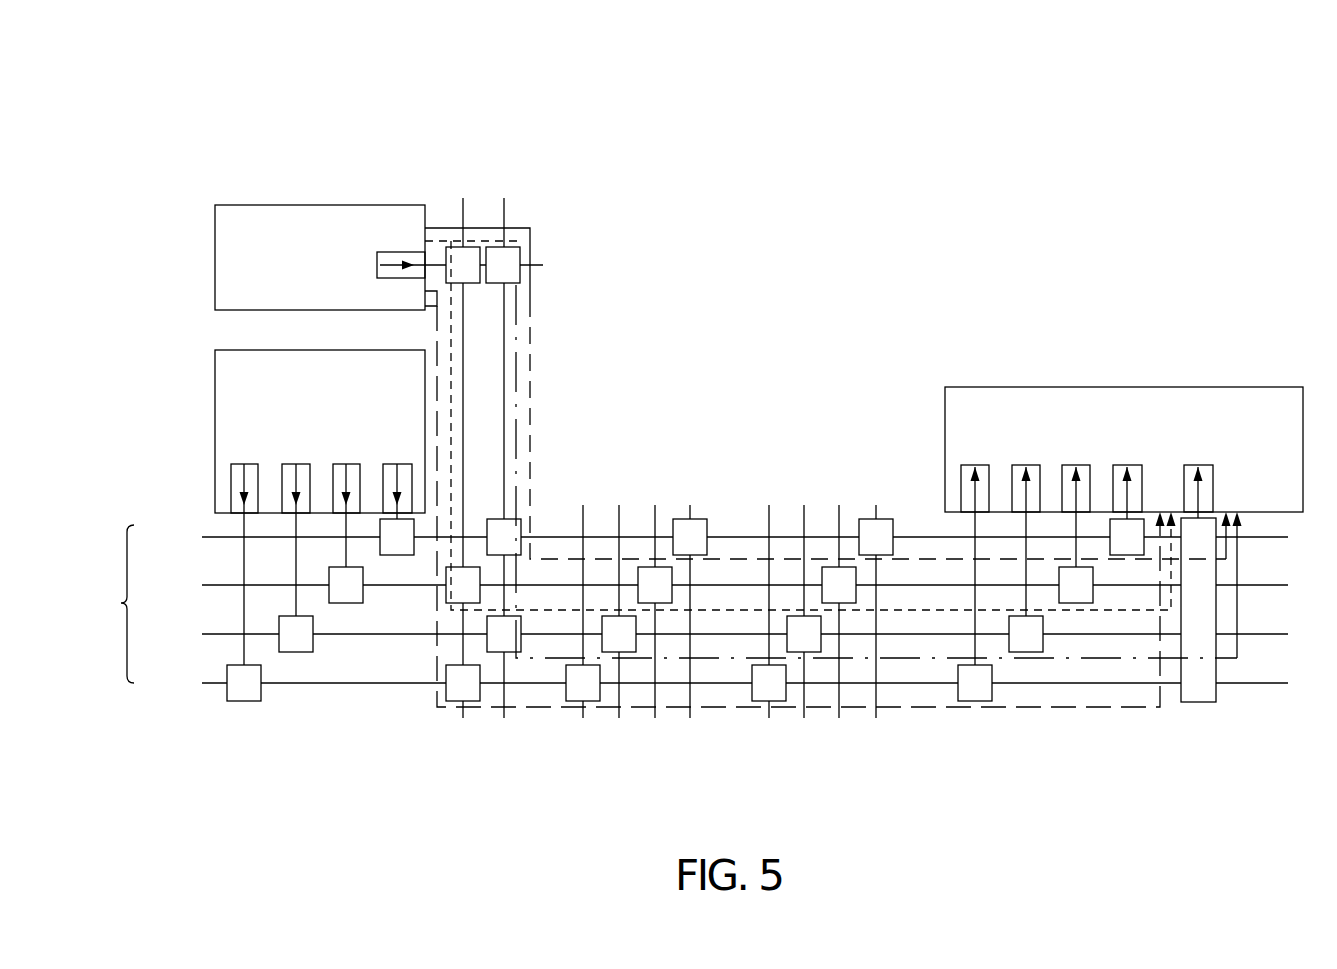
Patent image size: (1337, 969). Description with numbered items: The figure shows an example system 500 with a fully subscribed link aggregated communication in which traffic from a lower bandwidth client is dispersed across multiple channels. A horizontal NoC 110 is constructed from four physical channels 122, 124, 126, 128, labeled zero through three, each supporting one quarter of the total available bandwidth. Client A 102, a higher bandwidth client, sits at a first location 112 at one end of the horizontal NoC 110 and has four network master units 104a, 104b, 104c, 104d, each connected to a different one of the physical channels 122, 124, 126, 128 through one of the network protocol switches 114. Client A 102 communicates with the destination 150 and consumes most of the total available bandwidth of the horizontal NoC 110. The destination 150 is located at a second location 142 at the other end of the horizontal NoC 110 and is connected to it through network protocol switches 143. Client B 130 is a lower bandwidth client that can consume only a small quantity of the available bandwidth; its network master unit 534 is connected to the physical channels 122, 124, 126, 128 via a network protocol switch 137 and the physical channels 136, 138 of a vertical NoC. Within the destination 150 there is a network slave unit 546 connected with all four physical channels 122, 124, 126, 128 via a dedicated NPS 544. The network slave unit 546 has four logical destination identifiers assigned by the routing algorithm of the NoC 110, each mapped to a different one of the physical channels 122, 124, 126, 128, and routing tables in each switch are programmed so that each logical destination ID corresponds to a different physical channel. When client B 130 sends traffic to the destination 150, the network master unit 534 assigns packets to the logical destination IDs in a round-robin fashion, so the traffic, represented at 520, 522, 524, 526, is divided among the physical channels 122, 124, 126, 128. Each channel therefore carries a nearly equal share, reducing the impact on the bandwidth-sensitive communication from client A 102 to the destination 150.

The system 500 is at (262, 78).
The client A 102 is at (215, 378).
The network master unit 104a is at (255, 464).
The network master unit 104b is at (302, 464).
The network master unit 104c is at (340, 464).
The network master unit 104d is at (390, 464).
The horizontal NoC 110 is at (142, 609).
The first location 112 is at (498, 812).
The network protocol switches 114 is at (397, 555).
The physical channel 122 is at (220, 539).
The physical channel 124 is at (220, 587).
The physical channel 126 is at (220, 636).
The physical channel 128 is at (220, 685).
The client B 130 is at (388, 205).
The physical channel 136 is at (464, 212).
The network protocol switch 137 is at (472, 283).
The physical channel 138 is at (505, 212).
The second location 142 is at (966, 812).
The network protocol switches 143 is at (1127, 560).
The destination 150 is at (1100, 387).
The traffic 520 is at (440, 333).
The traffic 522 is at (438, 705).
The traffic 524 is at (531, 425).
The traffic 526 is at (516, 460).
The network master unit 534 is at (377, 265).
The dedicated NPS 544 is at (1198, 702).
The network slave unit 546 is at (1188, 465).